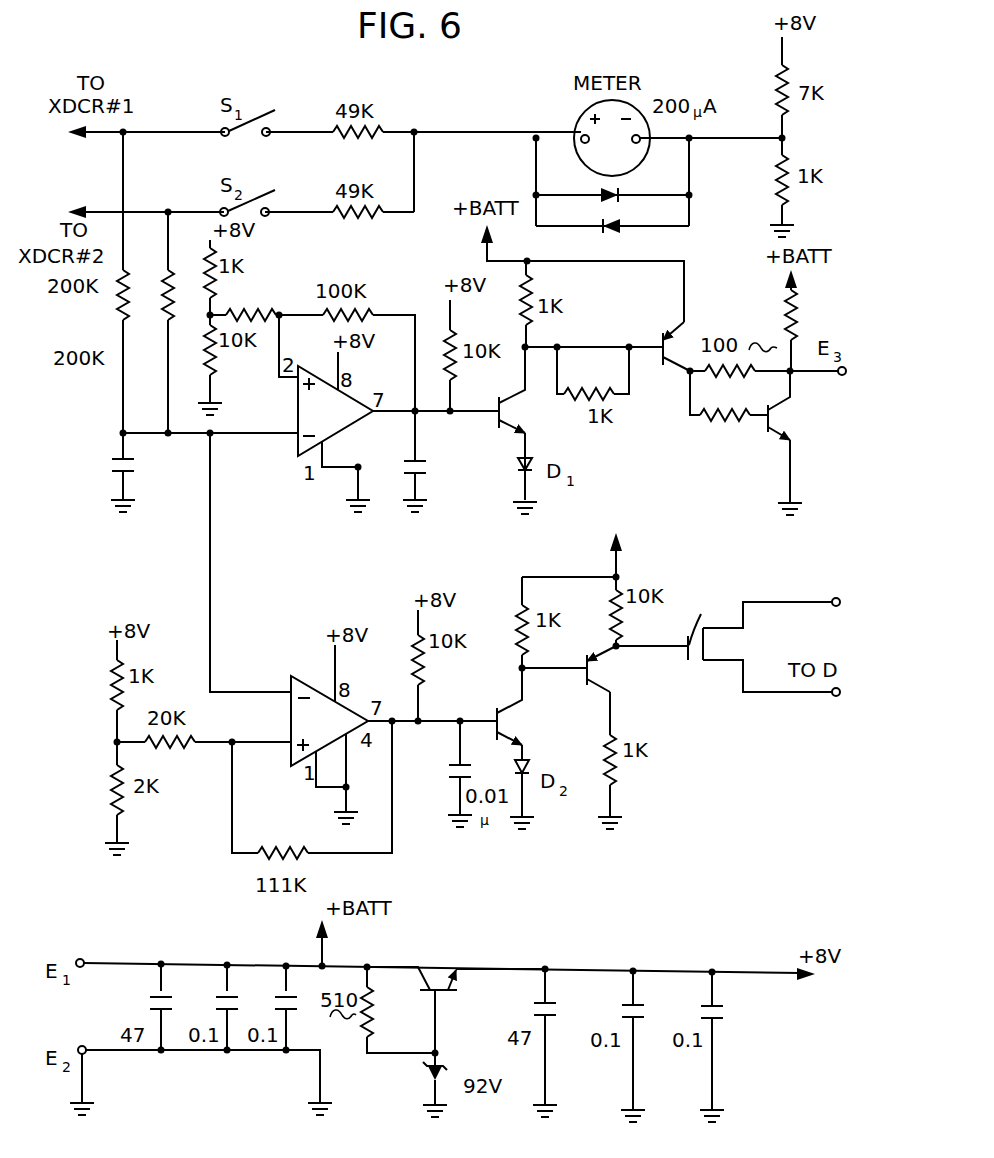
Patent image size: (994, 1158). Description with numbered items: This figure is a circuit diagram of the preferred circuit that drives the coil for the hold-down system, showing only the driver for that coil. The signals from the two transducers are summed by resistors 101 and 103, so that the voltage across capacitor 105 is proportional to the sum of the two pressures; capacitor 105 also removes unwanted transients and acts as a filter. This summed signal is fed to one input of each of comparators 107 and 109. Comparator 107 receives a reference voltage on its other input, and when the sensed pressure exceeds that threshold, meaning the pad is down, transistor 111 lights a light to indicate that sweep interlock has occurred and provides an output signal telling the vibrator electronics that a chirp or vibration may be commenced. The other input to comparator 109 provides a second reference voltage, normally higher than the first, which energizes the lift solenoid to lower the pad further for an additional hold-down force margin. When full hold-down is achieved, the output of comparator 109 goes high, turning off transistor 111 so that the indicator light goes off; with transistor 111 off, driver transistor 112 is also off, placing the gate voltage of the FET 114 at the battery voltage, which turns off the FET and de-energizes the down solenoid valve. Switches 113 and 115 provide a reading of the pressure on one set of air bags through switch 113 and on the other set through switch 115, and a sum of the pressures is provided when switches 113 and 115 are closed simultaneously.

The resistor 101 is at (118, 318).
The resistor 103 is at (166, 292).
The capacitor 105 is at (118, 458).
The comparator 107 is at (298, 440).
The comparator 109 is at (290, 687).
The transistor 111 is at (505, 404).
The driver transistor 112 is at (660, 340).
The switch 113 is at (261, 110).
The FET 114 is at (710, 629).
The switch 115 is at (263, 189).